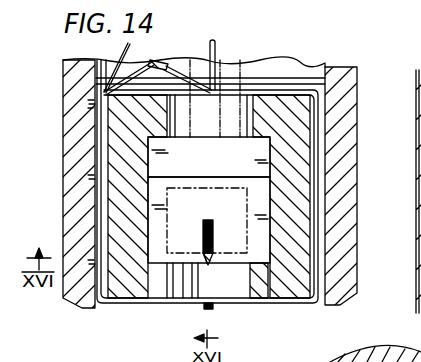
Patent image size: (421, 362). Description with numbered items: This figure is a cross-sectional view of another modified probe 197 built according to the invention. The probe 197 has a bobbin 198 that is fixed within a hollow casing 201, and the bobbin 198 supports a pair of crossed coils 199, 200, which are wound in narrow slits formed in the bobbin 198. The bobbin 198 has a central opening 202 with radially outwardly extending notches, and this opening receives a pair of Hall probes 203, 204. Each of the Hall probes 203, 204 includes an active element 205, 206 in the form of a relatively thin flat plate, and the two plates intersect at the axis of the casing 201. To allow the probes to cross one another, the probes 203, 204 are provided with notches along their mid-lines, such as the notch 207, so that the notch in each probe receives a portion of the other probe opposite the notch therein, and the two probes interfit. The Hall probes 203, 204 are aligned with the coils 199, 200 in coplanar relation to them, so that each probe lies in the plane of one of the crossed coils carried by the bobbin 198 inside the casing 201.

The modified probe 197 is at (300, 61).
The bobbin 198 is at (307, 125).
The coil 199 is at (327, 205).
The coil 200 is at (217, 309).
The hollow casing 201 is at (78, 197).
The central opening 202 is at (165, 268).
The Hall probe 203 is at (140, 300).
The Hall probe 204 is at (218, 257).
The active element 205 is at (233, 207).
The active element 206 is at (193, 290).
The notch 207 is at (203, 236).